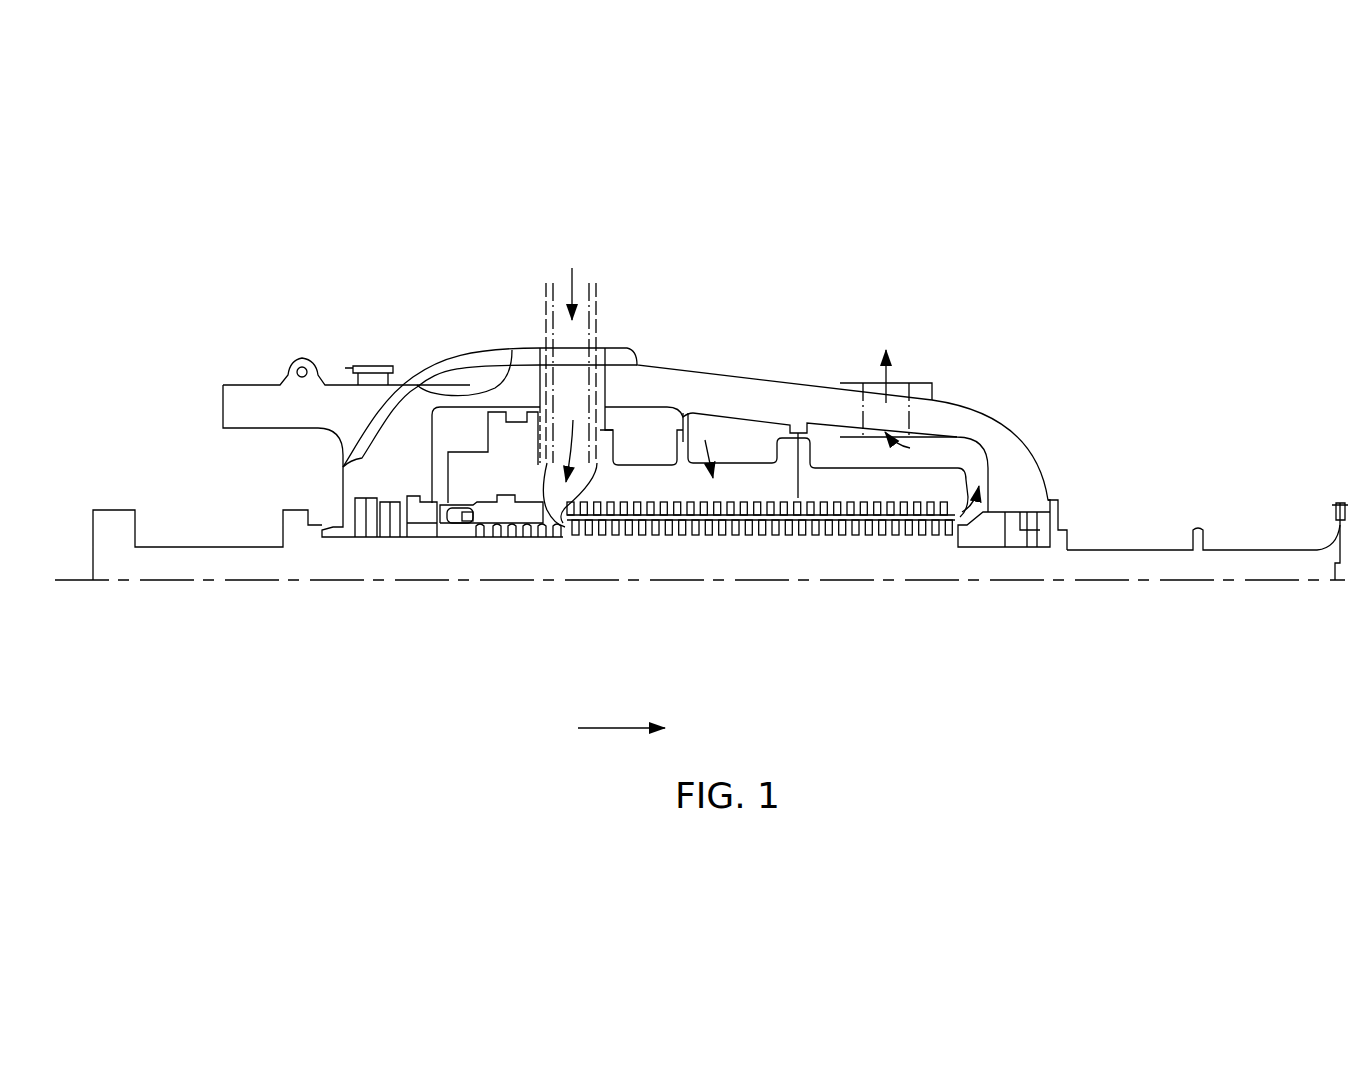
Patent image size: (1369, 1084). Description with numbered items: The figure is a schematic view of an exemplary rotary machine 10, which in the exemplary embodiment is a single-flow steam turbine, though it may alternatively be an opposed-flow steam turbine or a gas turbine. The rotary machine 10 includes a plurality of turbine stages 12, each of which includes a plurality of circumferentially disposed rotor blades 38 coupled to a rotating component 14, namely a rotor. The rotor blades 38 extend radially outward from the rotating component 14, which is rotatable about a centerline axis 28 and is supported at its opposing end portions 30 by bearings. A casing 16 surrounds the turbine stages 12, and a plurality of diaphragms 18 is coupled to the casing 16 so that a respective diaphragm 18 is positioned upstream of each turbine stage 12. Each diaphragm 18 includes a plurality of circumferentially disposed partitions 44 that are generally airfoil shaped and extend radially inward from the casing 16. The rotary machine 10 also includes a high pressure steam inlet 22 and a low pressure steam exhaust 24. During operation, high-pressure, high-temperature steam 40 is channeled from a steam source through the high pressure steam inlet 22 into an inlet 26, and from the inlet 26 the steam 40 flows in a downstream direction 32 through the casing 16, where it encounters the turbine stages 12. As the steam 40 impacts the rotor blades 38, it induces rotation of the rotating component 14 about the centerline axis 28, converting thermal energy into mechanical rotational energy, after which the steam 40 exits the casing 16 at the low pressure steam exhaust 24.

The rotary machine 10 is at (916, 230).
The turbine stages 12 is at (712, 550).
The rotating component 14 is at (1240, 536).
The casing 16 is at (1022, 418).
The diaphragms 18 is at (726, 495).
The high pressure steam inlet 22 is at (606, 310).
The low pressure steam exhaust 24 is at (911, 377).
The inlet 26 is at (540, 545).
The centerline axis 28 is at (1252, 585).
The end portions 30 is at (176, 545).
The downstream direction 32 is at (623, 725).
The rotor blades 38 is at (731, 542).
The steam 40 is at (573, 276).
The partitions 44 is at (710, 470).